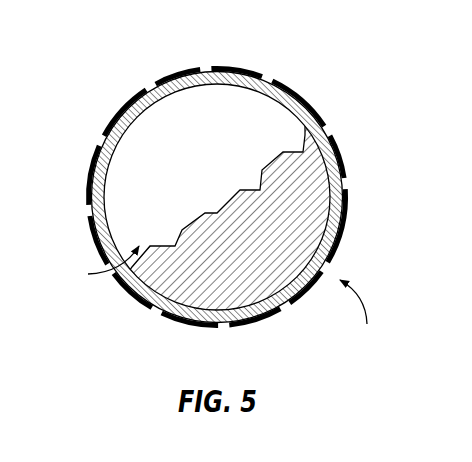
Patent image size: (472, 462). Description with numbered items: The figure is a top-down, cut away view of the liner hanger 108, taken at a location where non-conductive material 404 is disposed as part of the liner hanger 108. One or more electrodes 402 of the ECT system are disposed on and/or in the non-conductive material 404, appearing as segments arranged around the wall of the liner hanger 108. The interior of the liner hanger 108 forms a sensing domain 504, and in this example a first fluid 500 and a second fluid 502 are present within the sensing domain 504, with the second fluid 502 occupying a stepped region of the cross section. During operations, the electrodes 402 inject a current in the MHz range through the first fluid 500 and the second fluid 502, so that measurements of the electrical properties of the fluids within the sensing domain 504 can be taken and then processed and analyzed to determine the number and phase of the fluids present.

The liner hanger 108 is at (363, 321).
The electrodes 402 is at (122, 110).
The non-conductive material 404 is at (284, 83).
The first fluid 500 is at (207, 173).
The second fluid 502 is at (267, 266).
The sensing domain 504 is at (95, 267).